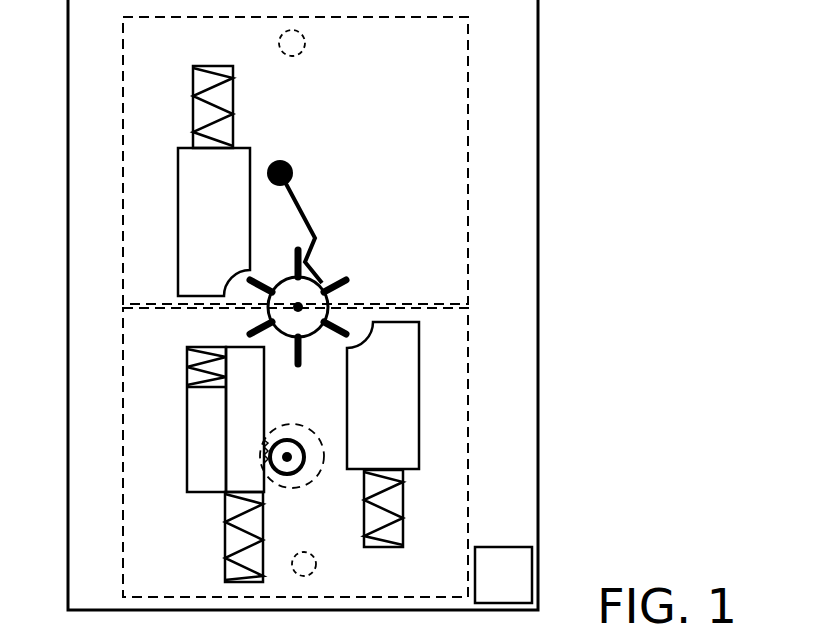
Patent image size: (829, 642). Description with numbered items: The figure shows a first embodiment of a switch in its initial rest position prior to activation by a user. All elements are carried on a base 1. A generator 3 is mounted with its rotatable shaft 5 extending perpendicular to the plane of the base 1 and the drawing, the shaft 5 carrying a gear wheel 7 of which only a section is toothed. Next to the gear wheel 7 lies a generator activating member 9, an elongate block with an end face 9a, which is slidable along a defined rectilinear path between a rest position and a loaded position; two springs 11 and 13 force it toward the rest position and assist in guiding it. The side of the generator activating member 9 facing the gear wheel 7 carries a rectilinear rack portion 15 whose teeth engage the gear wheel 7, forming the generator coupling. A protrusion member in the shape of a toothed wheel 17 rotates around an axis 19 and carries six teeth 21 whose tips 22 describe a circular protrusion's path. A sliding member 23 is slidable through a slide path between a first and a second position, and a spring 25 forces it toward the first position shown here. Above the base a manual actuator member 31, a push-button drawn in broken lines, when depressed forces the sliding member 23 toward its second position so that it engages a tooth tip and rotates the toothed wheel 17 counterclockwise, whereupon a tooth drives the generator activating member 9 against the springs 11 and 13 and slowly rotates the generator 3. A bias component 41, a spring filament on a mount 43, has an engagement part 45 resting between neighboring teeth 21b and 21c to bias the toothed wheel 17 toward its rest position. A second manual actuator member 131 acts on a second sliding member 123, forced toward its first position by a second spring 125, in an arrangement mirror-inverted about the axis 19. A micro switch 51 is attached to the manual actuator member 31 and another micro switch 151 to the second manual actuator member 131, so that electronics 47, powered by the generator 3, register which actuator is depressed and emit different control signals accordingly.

The base 1 is at (517, 38).
The generator 3 is at (318, 425).
The rotatable shaft 5 is at (293, 463).
The gear wheel 7 is at (288, 478).
The generator activating member 9 is at (203, 430).
The end face 9a is at (237, 345).
The spring 11 is at (232, 535).
The spring 13 is at (187, 360).
The rack portion 15 is at (268, 433).
The toothed wheel 17 is at (330, 297).
The axis 19 is at (303, 300).
The teeth 21 is at (335, 320).
The tooth 21b is at (348, 287).
The tooth 21c is at (292, 258).
The tips 22 is at (342, 340).
The sliding member 23 is at (405, 363).
The spring 25 is at (403, 520).
The manual actuator member 31 is at (468, 403).
The bias component 41 is at (305, 203).
The mount 43 is at (287, 160).
The engagement part 45 is at (332, 282).
The electronics 47 is at (518, 586).
The micro switch 51 is at (316, 566).
The second sliding member 123 is at (187, 180).
The second spring 125 is at (230, 100).
The second manual actuator member 131 is at (468, 143).
The micro switch 151 is at (305, 43).